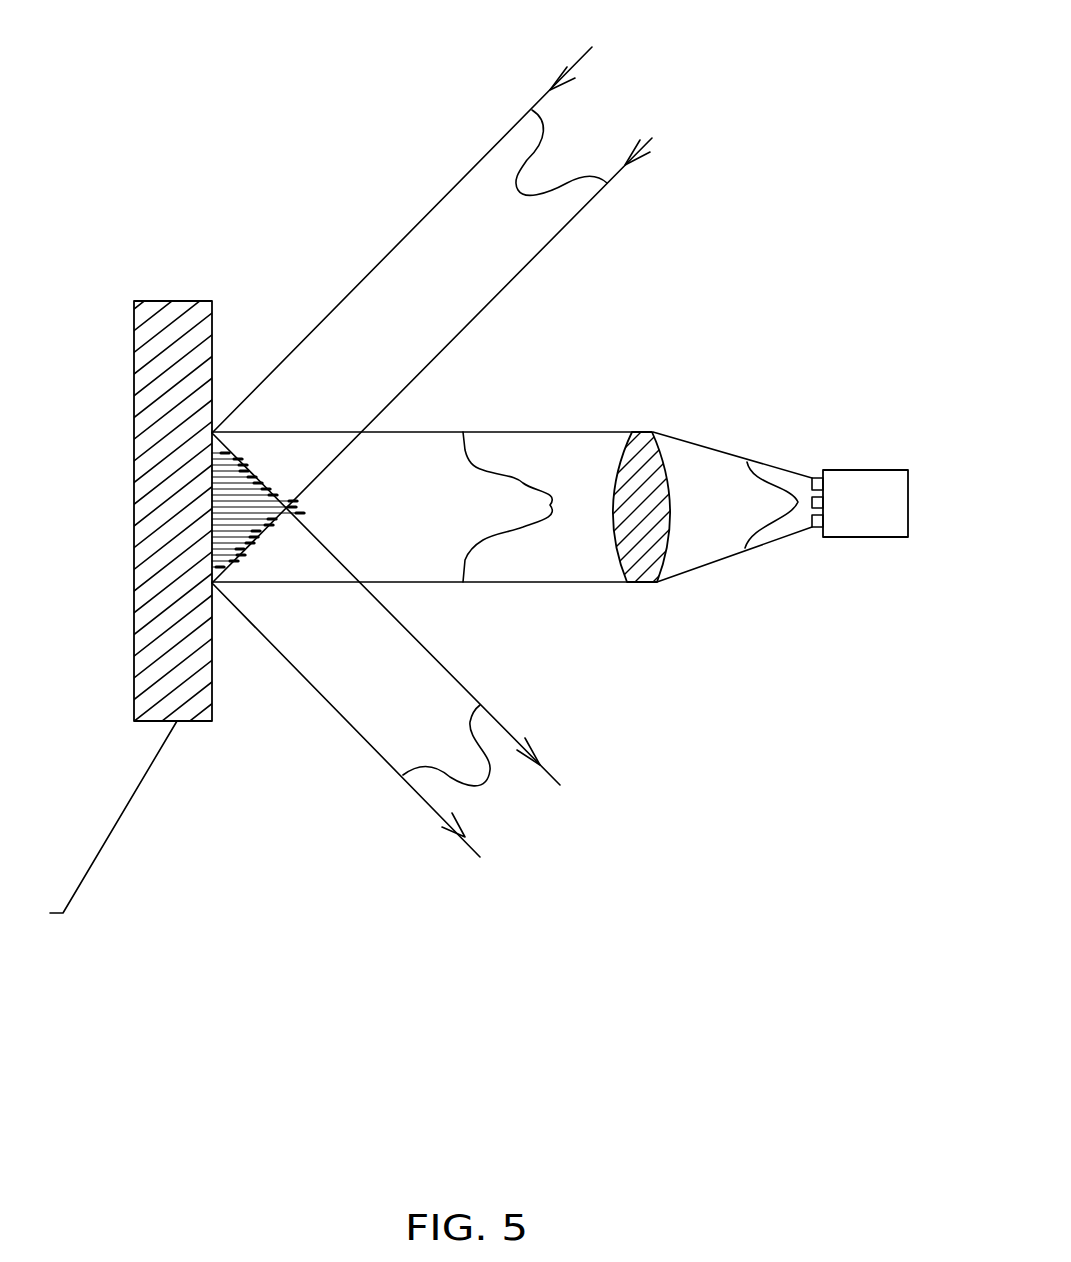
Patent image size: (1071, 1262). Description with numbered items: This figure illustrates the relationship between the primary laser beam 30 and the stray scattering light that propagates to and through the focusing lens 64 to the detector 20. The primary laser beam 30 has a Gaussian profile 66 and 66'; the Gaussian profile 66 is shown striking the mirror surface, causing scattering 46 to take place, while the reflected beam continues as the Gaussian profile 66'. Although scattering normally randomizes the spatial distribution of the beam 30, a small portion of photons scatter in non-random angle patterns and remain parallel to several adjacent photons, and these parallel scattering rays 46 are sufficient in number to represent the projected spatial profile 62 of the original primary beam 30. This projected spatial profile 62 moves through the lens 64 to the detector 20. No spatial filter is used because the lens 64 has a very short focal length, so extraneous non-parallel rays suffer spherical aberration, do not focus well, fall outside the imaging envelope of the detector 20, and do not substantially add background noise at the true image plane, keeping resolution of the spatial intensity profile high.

The primary laser beam 30 is at (387, 218).
The Gaussian profile 66 is at (432, 292).
The Gaussian profile 66' is at (386, 679).
The parallel scattering rays 46 is at (242, 369).
The projected spatial profile 62 is at (517, 394).
The lens 64 is at (648, 447).
The detector 20 is at (780, 555).